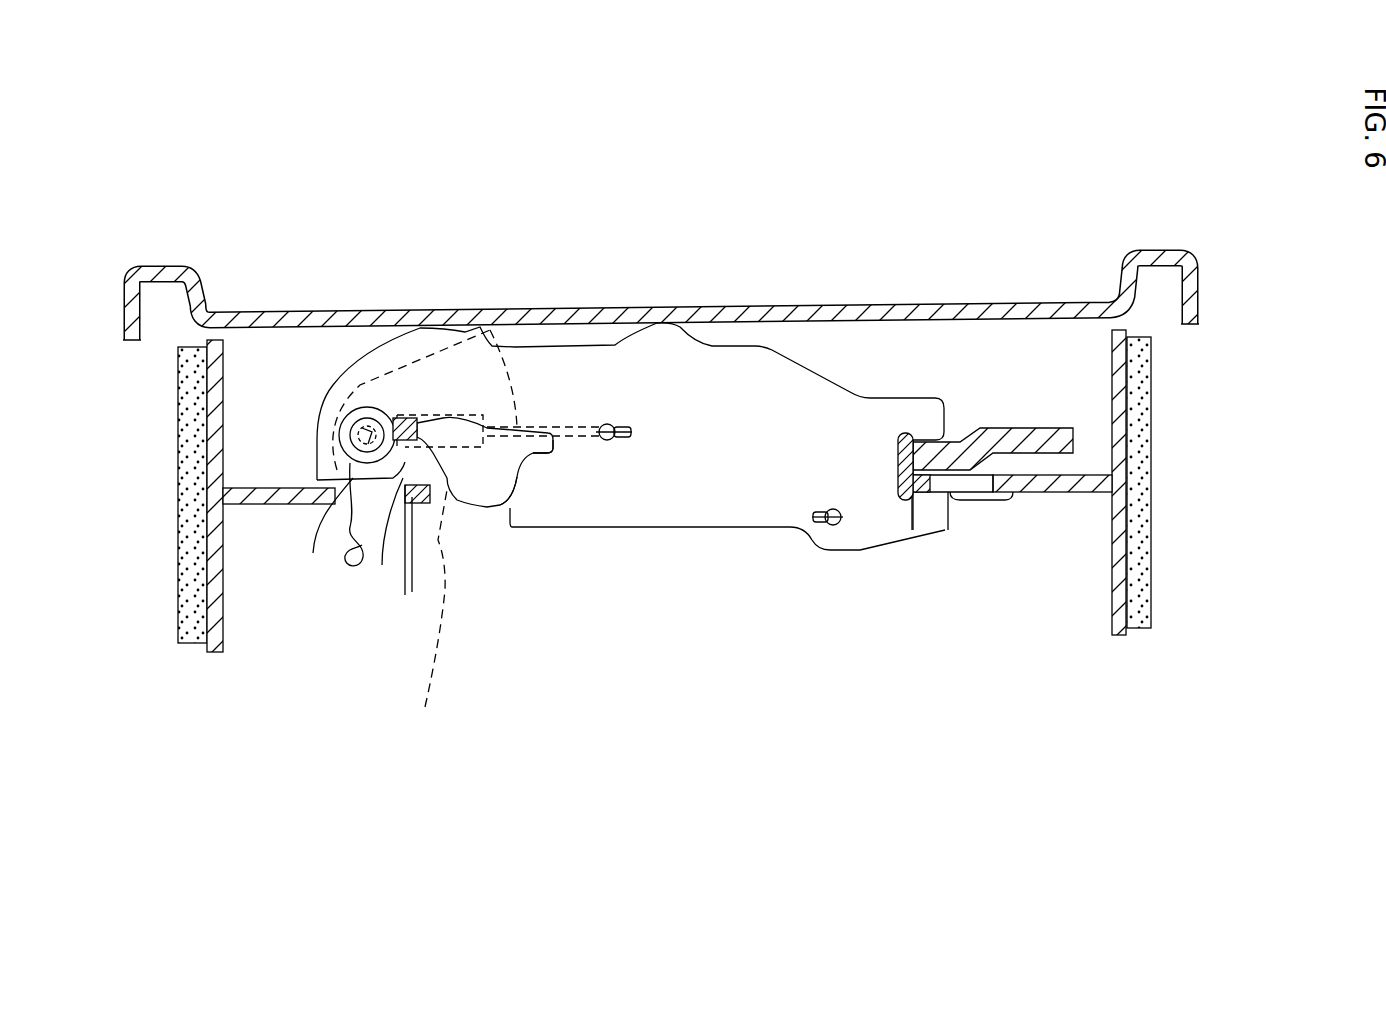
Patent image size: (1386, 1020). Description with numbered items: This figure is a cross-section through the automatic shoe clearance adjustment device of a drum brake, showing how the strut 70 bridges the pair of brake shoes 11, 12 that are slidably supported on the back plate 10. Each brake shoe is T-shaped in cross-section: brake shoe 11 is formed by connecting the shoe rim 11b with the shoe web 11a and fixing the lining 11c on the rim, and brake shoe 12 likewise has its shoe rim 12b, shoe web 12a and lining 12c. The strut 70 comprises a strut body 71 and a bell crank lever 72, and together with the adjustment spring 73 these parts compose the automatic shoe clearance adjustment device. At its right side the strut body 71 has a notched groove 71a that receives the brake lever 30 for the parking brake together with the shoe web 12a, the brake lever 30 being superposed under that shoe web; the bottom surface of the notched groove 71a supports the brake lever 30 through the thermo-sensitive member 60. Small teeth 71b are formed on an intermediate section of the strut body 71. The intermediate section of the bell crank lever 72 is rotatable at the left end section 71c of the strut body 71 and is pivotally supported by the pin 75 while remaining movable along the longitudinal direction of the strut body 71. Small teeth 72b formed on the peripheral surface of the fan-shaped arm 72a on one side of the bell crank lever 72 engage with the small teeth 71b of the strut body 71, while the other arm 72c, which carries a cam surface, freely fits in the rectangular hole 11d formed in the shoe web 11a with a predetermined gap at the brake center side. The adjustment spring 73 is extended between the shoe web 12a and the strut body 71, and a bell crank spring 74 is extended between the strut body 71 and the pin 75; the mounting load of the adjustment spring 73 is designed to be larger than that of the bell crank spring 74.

The back plate 10 is at (826, 300).
The brake shoe 11 is at (155, 544).
The shoe web 11a is at (278, 487).
The shoe rim 11b is at (215, 653).
The lining 11c is at (188, 643).
The rectangular hole 11d is at (400, 503).
The brake shoe 12 is at (1170, 532).
The shoe web 12a is at (1062, 492).
The shoe rim 12b is at (1118, 637).
The lining 12c is at (1147, 627).
The brake lever 30 is at (1030, 427).
The thermo-sensitive member 60 is at (880, 453).
The strut 70 is at (646, 507).
The strut body 71 is at (631, 483).
The notched groove 71a is at (905, 500).
The small teeth 71b is at (535, 552).
The left end section 71c is at (413, 338).
The bell crank lever 72 is at (450, 535).
The fan-shaped arm 72a is at (457, 518).
The small teeth 72b is at (558, 470).
The arm 72c is at (321, 541).
The adjustment spring 73 is at (947, 532).
The bell crank spring 74 is at (430, 615).
The pin 75 is at (367, 557).